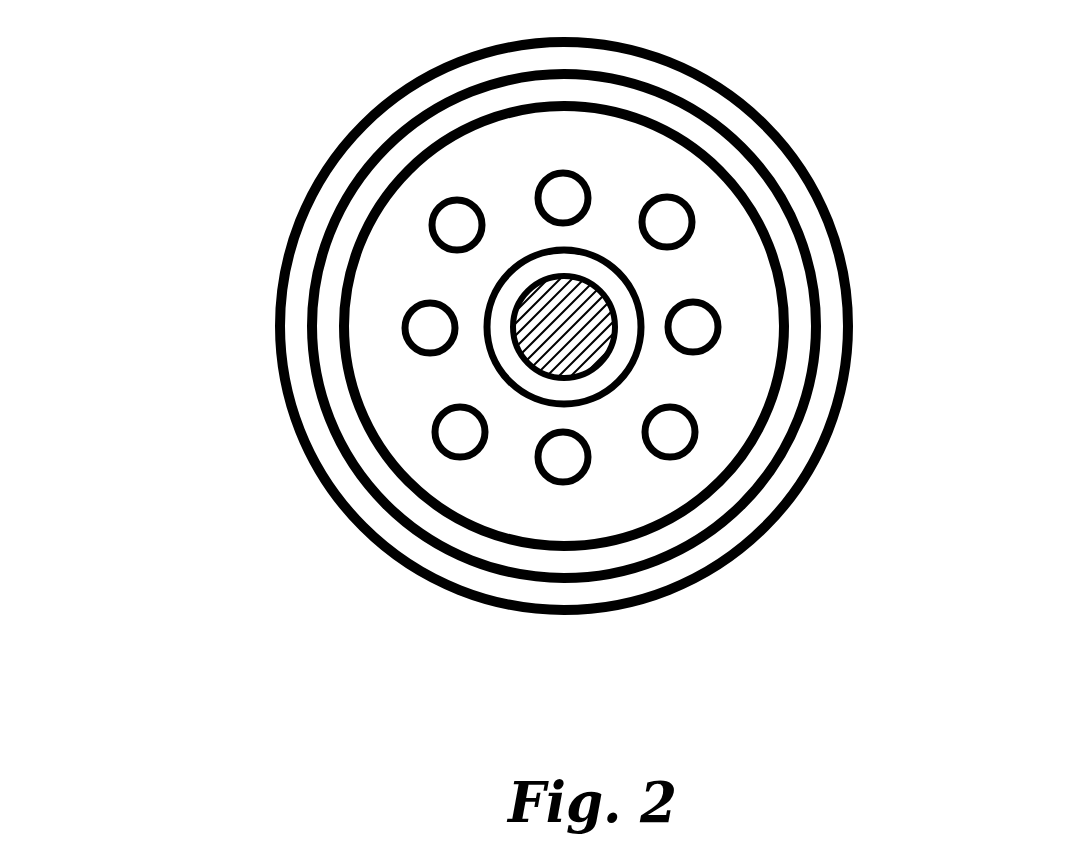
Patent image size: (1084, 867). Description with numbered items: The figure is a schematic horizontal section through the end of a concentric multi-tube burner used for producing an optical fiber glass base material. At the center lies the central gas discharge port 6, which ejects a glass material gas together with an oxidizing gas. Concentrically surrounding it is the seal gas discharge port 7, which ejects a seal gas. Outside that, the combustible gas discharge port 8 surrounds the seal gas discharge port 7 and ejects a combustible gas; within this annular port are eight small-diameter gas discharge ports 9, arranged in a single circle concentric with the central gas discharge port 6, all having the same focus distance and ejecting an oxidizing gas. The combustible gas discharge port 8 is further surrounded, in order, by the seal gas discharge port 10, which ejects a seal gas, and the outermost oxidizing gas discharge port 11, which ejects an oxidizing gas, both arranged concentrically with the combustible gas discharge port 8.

The central gas discharge port 6 is at (530, 366).
The seal gas discharge port 7 is at (592, 407).
The combustible gas discharge port 8 is at (757, 308).
The small-diameter gas discharge ports 9 is at (682, 231).
The seal gas discharge port 10 is at (367, 193).
The oxidizing gas discharge port 11 is at (298, 382).